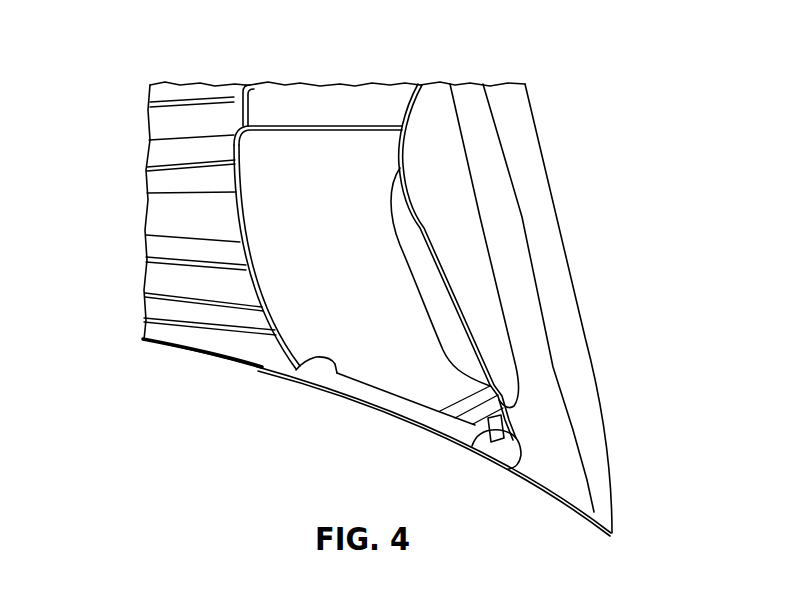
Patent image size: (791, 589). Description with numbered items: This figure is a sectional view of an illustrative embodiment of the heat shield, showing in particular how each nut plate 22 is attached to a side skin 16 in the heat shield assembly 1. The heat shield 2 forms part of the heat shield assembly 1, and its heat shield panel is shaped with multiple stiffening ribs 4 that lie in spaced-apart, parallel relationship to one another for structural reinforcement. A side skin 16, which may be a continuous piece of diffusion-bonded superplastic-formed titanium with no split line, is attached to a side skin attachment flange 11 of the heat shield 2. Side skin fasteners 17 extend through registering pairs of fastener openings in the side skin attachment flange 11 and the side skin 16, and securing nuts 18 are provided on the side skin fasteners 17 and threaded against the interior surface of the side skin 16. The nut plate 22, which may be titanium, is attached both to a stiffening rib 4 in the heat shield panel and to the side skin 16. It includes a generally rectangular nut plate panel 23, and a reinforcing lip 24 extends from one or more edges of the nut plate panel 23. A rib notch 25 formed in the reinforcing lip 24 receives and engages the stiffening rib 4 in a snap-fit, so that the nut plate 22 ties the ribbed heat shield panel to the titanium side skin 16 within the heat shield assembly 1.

The heat shield assembly 1 is at (594, 118).
The heat shield 2 is at (187, 356).
The stiffening ribs 4 is at (160, 265).
The side skin attachment flange 11 is at (595, 433).
The side skin 16 is at (513, 266).
The side skin fasteners 17 is at (481, 436).
The securing nuts 18 is at (497, 448).
The nut plate 22 is at (342, 84).
The nut plate panel 23 is at (388, 360).
The reinforcing lip 24 is at (280, 98).
The rib notch 25 is at (317, 363).